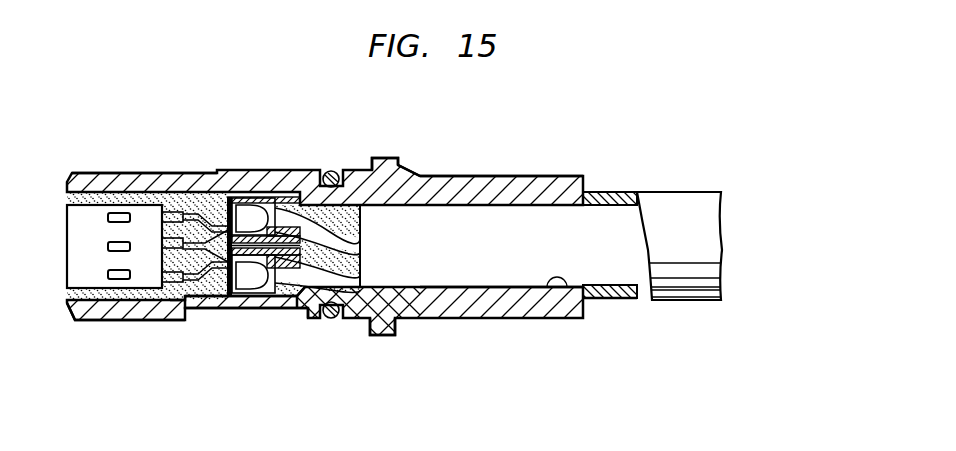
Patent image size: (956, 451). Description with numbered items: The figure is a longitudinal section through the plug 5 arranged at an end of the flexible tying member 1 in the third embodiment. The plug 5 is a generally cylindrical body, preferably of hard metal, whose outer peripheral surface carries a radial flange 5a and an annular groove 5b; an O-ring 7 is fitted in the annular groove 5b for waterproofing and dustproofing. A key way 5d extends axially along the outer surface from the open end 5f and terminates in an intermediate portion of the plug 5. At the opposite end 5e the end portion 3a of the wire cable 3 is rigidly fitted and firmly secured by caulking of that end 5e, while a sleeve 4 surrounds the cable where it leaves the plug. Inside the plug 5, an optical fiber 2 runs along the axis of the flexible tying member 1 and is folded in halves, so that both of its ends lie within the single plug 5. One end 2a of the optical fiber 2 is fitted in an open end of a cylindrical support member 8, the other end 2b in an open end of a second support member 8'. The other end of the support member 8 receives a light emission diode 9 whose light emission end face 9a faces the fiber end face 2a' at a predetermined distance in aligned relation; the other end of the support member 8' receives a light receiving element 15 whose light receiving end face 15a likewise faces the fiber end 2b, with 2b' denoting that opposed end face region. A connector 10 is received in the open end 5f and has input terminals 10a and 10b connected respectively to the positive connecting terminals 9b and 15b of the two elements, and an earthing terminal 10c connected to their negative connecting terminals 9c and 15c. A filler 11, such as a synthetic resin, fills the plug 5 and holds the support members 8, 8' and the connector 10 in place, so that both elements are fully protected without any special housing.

The flexible tying member 1 is at (687, 192).
The optical fiber 2 is at (397, 335).
The end of the optical fiber 2a is at (385, 246).
The end face of the optical fiber 2a' is at (386, 137).
The end portion of the optical fiber 2b is at (401, 361).
The groove of plug body 2b' is at (375, 353).
The wire cable 3 is at (612, 192).
The end portion of the wire cable 3a is at (463, 277).
The cable sheath end 4 is at (620, 300).
The plug 5 is at (562, 176).
The radial flange 5a is at (415, 173).
The annular groove 5b is at (462, 176).
The key way 5d is at (110, 177).
The opposite end of the plug 5e is at (548, 297).
The open end of the plug 5f is at (92, 320).
The O-ring 7 is at (382, 160).
The support member 8 is at (354, 140).
The support member 8' is at (345, 347).
The light emission diode 9 is at (268, 200).
The light emission end face 9a is at (292, 195).
The positive connecting terminal of the light emission element 9b is at (236, 199).
The negative connecting terminal of the light emission element 9c is at (252, 198).
The connector 10 is at (93, 215).
The input terminal of the connector 10a is at (192, 228).
The input terminal of the connector 10b is at (160, 300).
The earthing terminal of the connector 10c is at (170, 217).
The filler 11 is at (172, 308).
The light receiving element 15 is at (260, 308).
The light receiving end face 15a is at (290, 308).
The connecting terminal of the light receiving element 15b is at (225, 308).
The connecting terminal of the light receiving element 15c is at (203, 308).